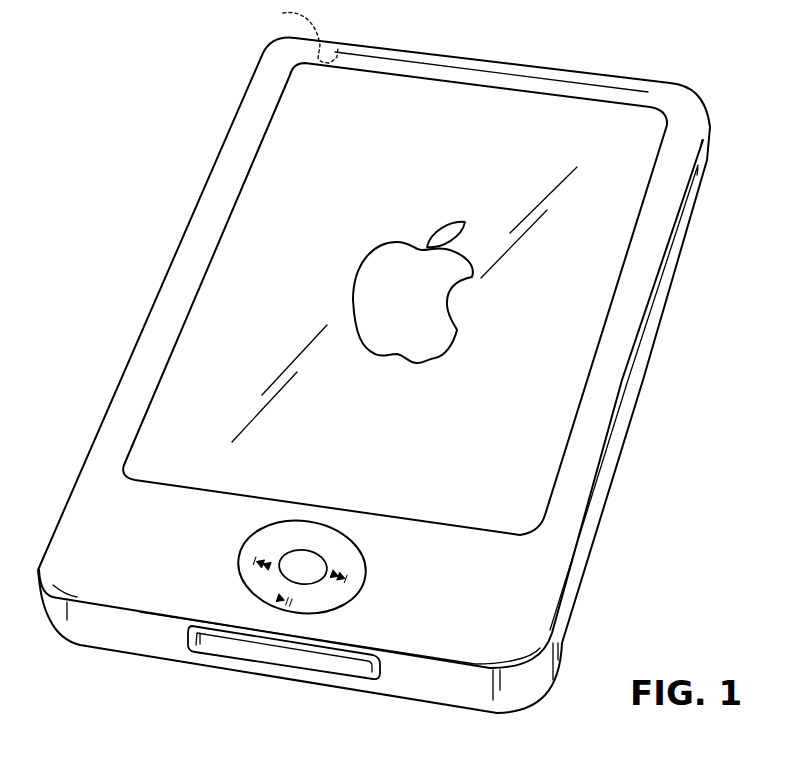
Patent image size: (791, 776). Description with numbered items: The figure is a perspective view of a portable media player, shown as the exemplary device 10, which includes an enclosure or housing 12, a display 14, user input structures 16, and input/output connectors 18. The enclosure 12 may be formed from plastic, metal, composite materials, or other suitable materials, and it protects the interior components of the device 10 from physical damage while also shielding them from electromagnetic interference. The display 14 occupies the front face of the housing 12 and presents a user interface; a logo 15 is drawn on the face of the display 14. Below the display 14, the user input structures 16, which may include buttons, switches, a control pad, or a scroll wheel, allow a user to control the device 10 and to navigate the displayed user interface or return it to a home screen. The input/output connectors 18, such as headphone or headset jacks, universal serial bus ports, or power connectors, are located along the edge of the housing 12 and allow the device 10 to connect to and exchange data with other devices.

The portable media player 10 is at (163, 60).
The enclosure or housing 12 is at (710, 147).
The display 14 is at (570, 107).
The logo 15 is at (362, 265).
The user input structures 16 is at (240, 568).
The input/output connectors 18 is at (228, 708).